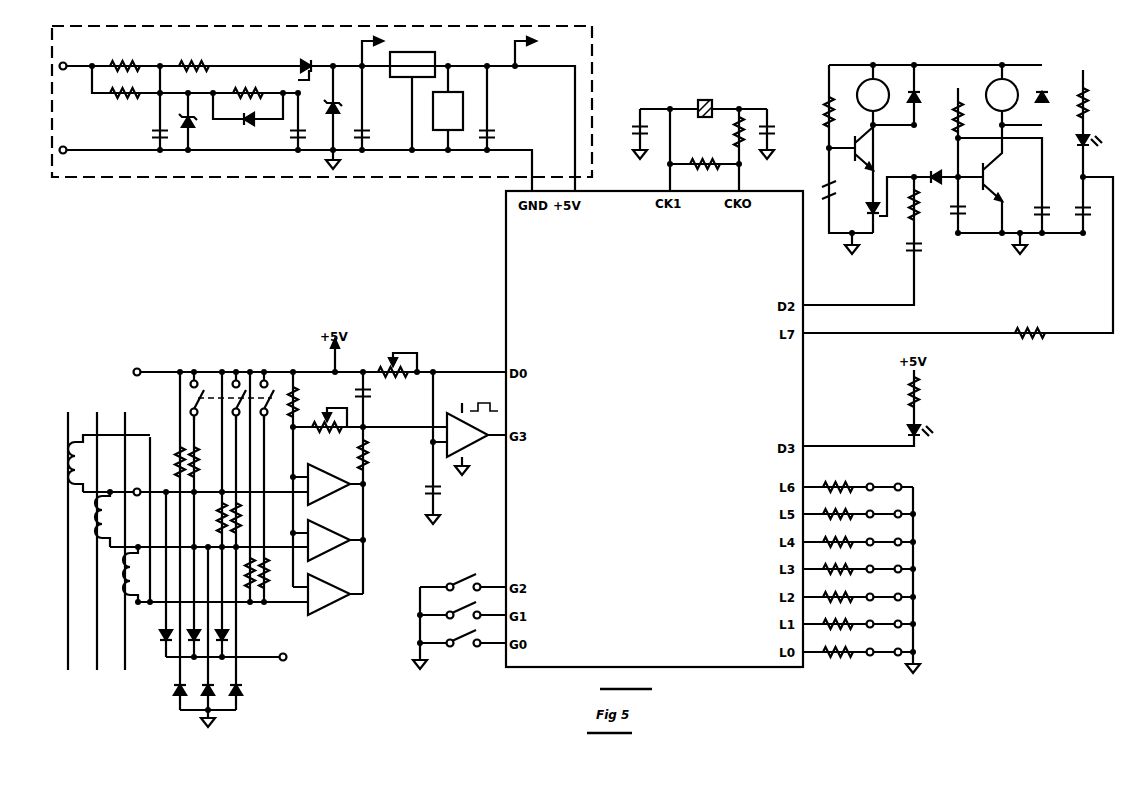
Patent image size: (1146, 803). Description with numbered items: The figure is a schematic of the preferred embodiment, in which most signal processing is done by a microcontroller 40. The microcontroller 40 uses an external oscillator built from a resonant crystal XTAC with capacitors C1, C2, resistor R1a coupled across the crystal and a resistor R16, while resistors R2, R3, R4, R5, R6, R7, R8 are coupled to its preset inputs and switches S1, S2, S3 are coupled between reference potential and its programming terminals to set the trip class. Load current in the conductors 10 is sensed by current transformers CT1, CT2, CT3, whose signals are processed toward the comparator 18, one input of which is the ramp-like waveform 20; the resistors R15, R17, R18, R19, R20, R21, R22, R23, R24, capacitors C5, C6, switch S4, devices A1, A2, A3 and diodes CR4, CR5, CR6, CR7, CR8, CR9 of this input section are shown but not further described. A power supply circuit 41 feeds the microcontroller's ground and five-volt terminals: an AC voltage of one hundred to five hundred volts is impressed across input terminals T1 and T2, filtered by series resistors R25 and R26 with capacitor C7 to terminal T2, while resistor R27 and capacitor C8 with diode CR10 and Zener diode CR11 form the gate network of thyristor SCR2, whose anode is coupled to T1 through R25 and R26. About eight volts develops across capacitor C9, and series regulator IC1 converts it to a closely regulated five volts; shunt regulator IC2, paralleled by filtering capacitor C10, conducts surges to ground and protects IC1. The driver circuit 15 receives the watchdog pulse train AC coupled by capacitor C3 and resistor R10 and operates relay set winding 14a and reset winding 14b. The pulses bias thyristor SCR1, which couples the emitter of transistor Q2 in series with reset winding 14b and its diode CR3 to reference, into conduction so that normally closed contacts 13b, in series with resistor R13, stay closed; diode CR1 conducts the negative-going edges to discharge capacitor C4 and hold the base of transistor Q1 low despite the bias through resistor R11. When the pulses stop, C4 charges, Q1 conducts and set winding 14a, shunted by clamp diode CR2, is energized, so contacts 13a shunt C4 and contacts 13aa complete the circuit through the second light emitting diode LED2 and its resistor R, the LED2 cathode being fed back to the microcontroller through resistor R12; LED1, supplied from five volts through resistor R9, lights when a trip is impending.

The conductors 10 is at (187, 549).
The driver stage 15 is at (946, 148).
The comparator 18 is at (470, 447).
The ramp-like waveform 20 is at (490, 403).
The microcontroller 40 is at (650, 634).
The power supply circuit 41 is at (340, 108).
The normally-open contacts 13a is at (1033, 201).
The normally-open contacts 13aa is at (1072, 201).
The normally closed contacts 13b is at (844, 187).
The relay set winding 14a is at (1022, 79).
The reset winding 14b is at (886, 86).
The input terminal T1 is at (71, 59).
The input terminal T2 is at (71, 143).
The resistor R25 is at (125, 58).
The resistor R26 is at (194, 57).
The resistor R27 is at (125, 86).
The thyristor SCR2 is at (299, 58).
The capacitor C7 is at (150, 136).
The Zener diode CR11 is at (205, 128).
The diode CR10 is at (252, 115).
The capacitor C8 is at (306, 136).
The capacitor C9 is at (371, 136).
The series voltage regulator IC1 is at (412, 64).
The shunt regulator IC2 is at (448, 111).
The capacitor C10 is at (501, 136).
The capacitor C1 is at (633, 141).
The capacitor C2 is at (776, 141).
The resonant crystal XTAC is at (703, 99).
The resistor R16 is at (551, 293).
The resistor R1a is at (705, 172).
The resistor R8 is at (838, 479).
The resistor R7 is at (838, 506).
The resistor R6 is at (838, 534).
The resistor R5 is at (838, 561).
The resistor R4 is at (838, 589).
The resistor R3 is at (838, 616).
The resistor R2 is at (838, 644).
The resistor R9 is at (925, 392).
The light emitting diode LED1 is at (938, 432).
The resistor R12 is at (1030, 326).
The resistor R13 is at (843, 112).
The diode CR3 is at (928, 99).
The second transistor Q2 is at (871, 149).
The thyristor SCR1 is at (857, 211).
The resistor R10 is at (928, 205).
The capacitor C3 is at (924, 250).
The diode CR1 is at (937, 168).
The resistor R11 is at (972, 117).
The capacitor C4 is at (967, 211).
The transistor Q1 is at (1002, 179).
The clamp diode CR2 is at (1056, 99).
The resistor R is at (1090, 103).
The second light emitting diode LED2 is at (1101, 132).
The potentiometer R23 is at (389, 363).
The potentiometer R24 is at (329, 430).
The resistor R15 is at (307, 402).
The capacitor C5 is at (371, 395).
The capacitor C6 is at (425, 504).
The switch S4 is at (239, 396).
The amplifier A1 is at (329, 484).
The amplifier A2 is at (329, 540).
The amplifier A3 is at (329, 594).
The switch S1 is at (462, 580).
The switch S2 is at (462, 608).
The switch S3 is at (462, 636).
The current transformer CT1 is at (109, 463).
The current transformer CT2 is at (112, 519).
The current transformer CT3 is at (140, 574).
The resistor R17 is at (169, 462).
The resistor R18 is at (210, 518).
The resistor R19 is at (239, 573).
The resistor R20 is at (207, 462).
The resistor R21 is at (240, 512).
The resistor R22 is at (278, 573).
The diode CR4 is at (167, 691).
The diode CR5 is at (212, 686).
The diode CR6 is at (251, 691).
The diode CR7 is at (153, 637).
The diode CR8 is at (212, 632).
The diode CR9 is at (232, 638).